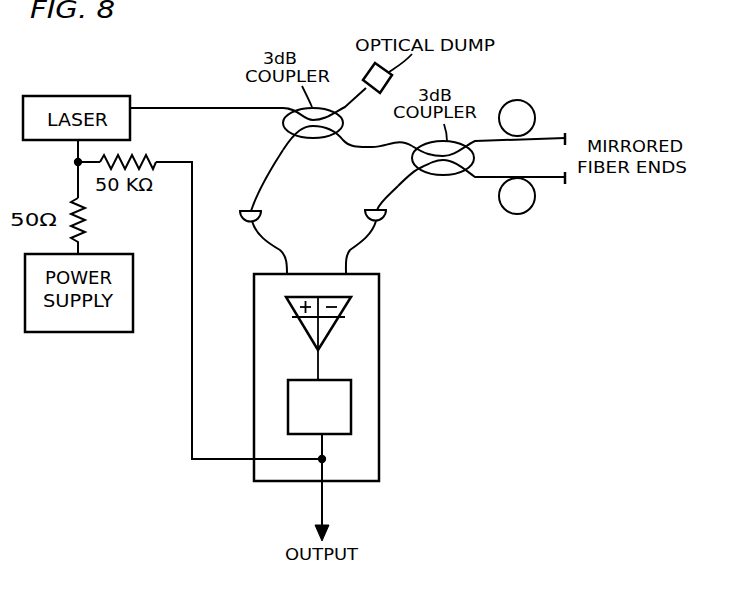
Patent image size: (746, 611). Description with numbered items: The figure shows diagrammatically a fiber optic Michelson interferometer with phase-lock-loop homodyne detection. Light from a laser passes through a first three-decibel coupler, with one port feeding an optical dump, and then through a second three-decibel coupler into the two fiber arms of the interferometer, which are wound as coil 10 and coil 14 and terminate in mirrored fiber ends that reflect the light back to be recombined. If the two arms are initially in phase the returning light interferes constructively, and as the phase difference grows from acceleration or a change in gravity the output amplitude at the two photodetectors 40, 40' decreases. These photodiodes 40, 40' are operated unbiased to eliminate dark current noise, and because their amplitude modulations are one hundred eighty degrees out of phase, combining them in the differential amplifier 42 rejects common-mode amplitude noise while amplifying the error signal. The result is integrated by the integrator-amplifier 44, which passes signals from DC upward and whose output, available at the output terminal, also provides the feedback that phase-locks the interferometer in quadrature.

The fiber coil 10 is at (547, 96).
The fiber coil 14 is at (525, 202).
The photodetector 40 is at (247, 212).
The photodetector 40' is at (365, 230).
The differential amplifier 42 is at (352, 336).
The integrator-amplifier 44 is at (353, 407).